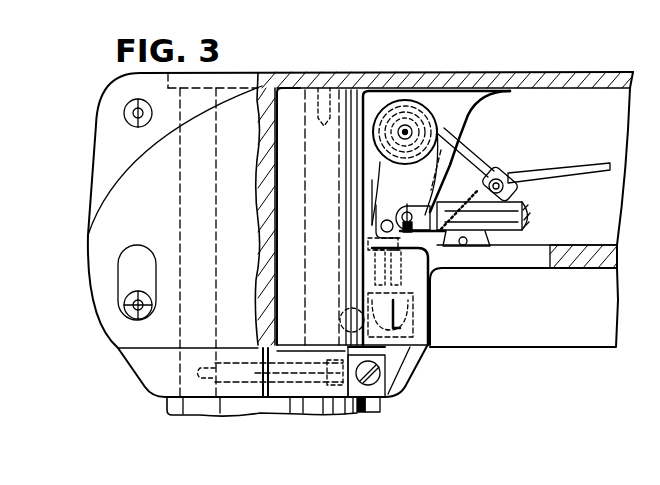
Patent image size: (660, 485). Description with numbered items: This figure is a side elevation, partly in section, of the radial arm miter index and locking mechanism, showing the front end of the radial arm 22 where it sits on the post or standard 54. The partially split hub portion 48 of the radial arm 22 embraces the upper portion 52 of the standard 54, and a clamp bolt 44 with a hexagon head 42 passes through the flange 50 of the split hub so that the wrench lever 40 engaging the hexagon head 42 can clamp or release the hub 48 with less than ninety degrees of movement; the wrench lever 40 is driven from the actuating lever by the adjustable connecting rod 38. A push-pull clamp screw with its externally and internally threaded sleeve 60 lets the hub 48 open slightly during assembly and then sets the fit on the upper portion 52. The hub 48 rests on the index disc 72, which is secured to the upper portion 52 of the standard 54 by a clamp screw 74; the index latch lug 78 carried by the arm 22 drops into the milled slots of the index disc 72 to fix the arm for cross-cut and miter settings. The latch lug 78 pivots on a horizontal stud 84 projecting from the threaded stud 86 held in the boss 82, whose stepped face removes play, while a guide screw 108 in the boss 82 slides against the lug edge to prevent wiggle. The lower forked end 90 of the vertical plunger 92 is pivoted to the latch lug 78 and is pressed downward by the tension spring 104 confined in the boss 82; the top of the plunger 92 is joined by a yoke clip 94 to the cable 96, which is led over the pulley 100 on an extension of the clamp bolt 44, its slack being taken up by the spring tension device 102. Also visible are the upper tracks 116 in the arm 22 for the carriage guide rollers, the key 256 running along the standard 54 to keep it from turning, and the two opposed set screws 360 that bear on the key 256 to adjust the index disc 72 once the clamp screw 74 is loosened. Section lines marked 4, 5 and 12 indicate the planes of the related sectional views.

The section line 4- 4 is at (405, 72).
The section line 5- 5 is at (118, 348).
The section line 12- 12 is at (238, 113).
The radial arm 22 is at (580, 72).
The adjustable connecting rod 38 is at (530, 223).
The wrench lever 40 is at (430, 193).
The hexagon head 42 is at (423, 103).
The clamp bolt 44 is at (478, 100).
The partially split hub portion 48 is at (294, 98).
The flange 50 is at (466, 117).
The upper portion of the post or standard 52 is at (180, 198).
The post or standard 54 is at (190, 418).
The externally and internally threaded sleeve 60 is at (126, 110).
The index disc 72 is at (143, 378).
The clamp screw 74 is at (266, 415).
The index latch lug 78 is at (428, 322).
The boss 82 is at (380, 265).
The horizontal stud 84 is at (352, 318).
The threaded stud 86 is at (362, 296).
The lower forked end 90 is at (428, 304).
The vertical plunger 92 is at (372, 222).
The yoke clip 94 is at (437, 176).
The cable 96 is at (470, 153).
The pulley 100 is at (490, 179).
The spring tension device 102 is at (508, 196).
The tension spring 104 is at (428, 283).
The guide screw 108 is at (428, 340).
The upper tracks 116 is at (578, 270).
The key 256 is at (372, 408).
The set screws 360 is at (352, 416).